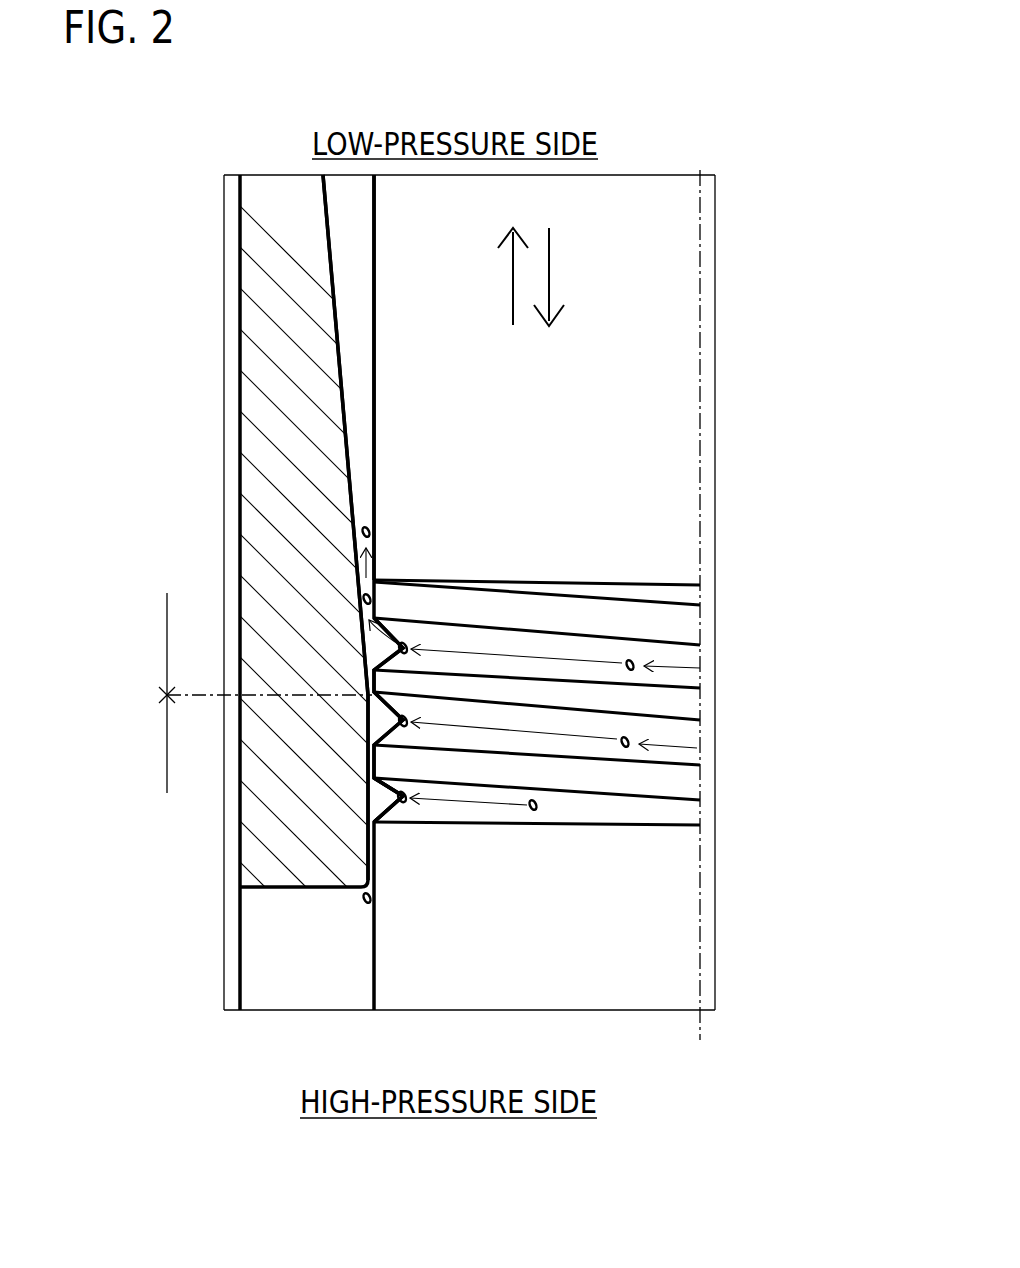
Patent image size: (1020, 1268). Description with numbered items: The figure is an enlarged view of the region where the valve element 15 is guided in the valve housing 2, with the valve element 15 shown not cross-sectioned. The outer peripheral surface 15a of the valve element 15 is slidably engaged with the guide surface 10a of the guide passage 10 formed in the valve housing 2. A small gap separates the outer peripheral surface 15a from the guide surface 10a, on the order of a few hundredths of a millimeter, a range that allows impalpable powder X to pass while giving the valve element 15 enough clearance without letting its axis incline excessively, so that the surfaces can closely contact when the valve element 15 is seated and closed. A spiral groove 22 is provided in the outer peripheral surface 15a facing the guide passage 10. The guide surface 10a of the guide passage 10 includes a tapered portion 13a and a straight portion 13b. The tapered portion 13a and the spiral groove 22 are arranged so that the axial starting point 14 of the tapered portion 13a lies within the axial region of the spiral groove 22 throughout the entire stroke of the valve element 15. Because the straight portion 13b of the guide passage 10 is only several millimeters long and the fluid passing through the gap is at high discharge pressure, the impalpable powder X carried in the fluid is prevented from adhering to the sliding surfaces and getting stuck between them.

The valve housing 2 is at (262, 262).
The tapered portion 13a is at (345, 432).
The straight portion 13b is at (178, 867).
The axial starting point 14 is at (200, 694).
The valve element 15 is at (627, 490).
The outer peripheral surface 15a is at (375, 475).
The spiral groove 22 is at (630, 623).
The guide passage 10 is at (376, 854).
The guide surface 10a is at (366, 815).
The impalpable powder X is at (540, 806).